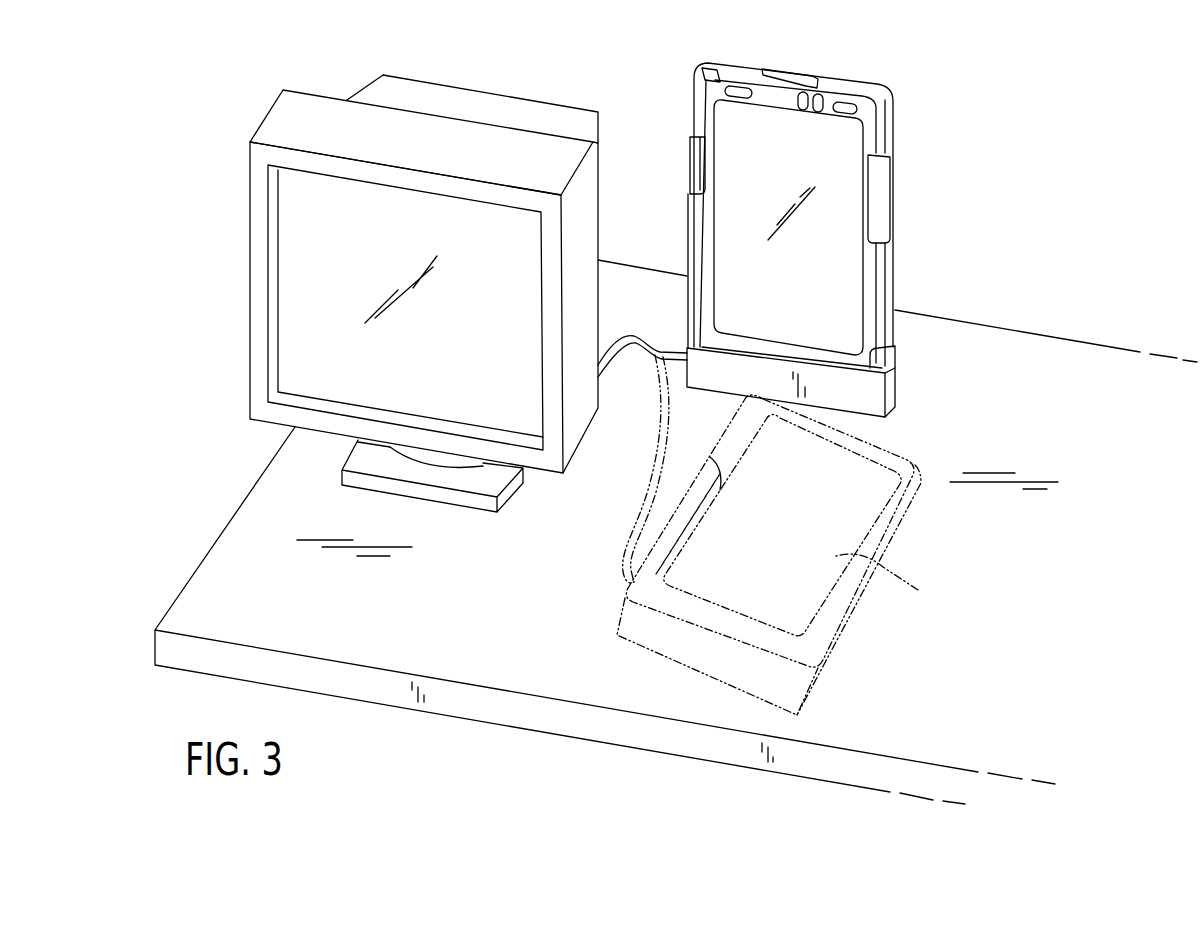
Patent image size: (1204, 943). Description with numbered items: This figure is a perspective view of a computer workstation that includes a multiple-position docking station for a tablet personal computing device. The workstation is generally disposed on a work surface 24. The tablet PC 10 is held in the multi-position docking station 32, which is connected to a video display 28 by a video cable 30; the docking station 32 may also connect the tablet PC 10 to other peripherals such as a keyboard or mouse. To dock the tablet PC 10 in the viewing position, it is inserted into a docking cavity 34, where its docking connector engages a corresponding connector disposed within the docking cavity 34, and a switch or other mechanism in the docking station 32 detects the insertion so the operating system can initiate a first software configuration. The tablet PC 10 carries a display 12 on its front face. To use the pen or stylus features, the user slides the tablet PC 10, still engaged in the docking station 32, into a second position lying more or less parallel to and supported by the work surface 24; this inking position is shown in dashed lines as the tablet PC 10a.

The tablet PC 10 is at (820, 203).
The tablet PC in inking position 10a is at (785, 555).
The display screen 12 is at (855, 164).
The work surface 24 is at (492, 616).
The video display 28 is at (293, 122).
The video cable 30 is at (634, 337).
The multi-position docking station 32 is at (690, 175).
The docking cavity 34 is at (873, 350).